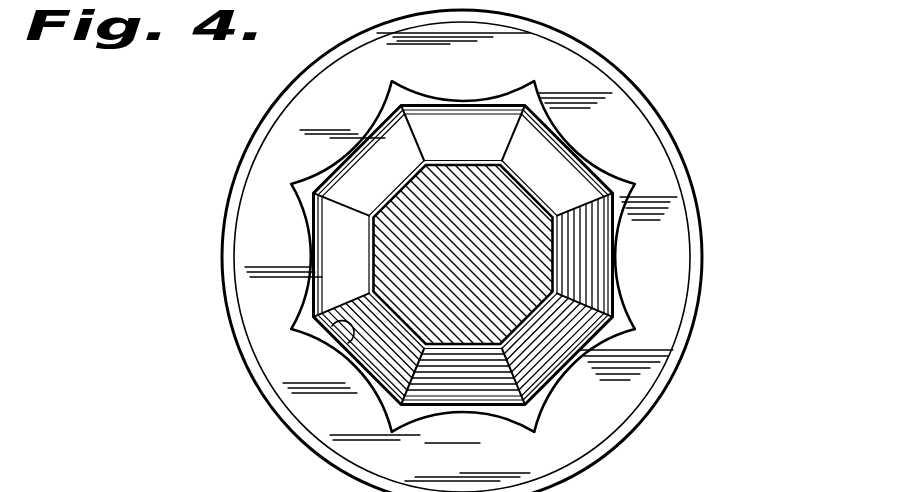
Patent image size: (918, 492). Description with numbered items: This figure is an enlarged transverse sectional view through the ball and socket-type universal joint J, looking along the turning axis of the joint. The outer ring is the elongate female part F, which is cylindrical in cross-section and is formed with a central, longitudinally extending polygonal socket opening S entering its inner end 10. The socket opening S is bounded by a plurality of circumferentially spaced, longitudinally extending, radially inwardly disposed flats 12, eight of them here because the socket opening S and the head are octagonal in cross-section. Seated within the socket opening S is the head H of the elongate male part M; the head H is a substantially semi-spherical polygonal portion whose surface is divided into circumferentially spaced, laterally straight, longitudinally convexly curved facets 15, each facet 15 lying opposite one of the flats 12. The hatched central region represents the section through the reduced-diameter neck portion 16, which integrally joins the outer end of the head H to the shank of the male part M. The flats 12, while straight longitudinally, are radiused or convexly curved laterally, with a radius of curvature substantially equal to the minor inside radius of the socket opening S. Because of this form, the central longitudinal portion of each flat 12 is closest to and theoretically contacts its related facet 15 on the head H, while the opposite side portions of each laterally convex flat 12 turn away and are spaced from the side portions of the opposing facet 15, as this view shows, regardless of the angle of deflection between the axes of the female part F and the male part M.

The female part F is at (490, 251).
The universal joint J is at (481, 257).
The head H is at (490, 214).
The male part M is at (662, 255).
The inner end 10 is at (678, 304).
The flats 12 is at (600, 346).
The facets 15 is at (327, 278).
The neck portion 16 is at (370, 243).
The socket opening S is at (285, 370).